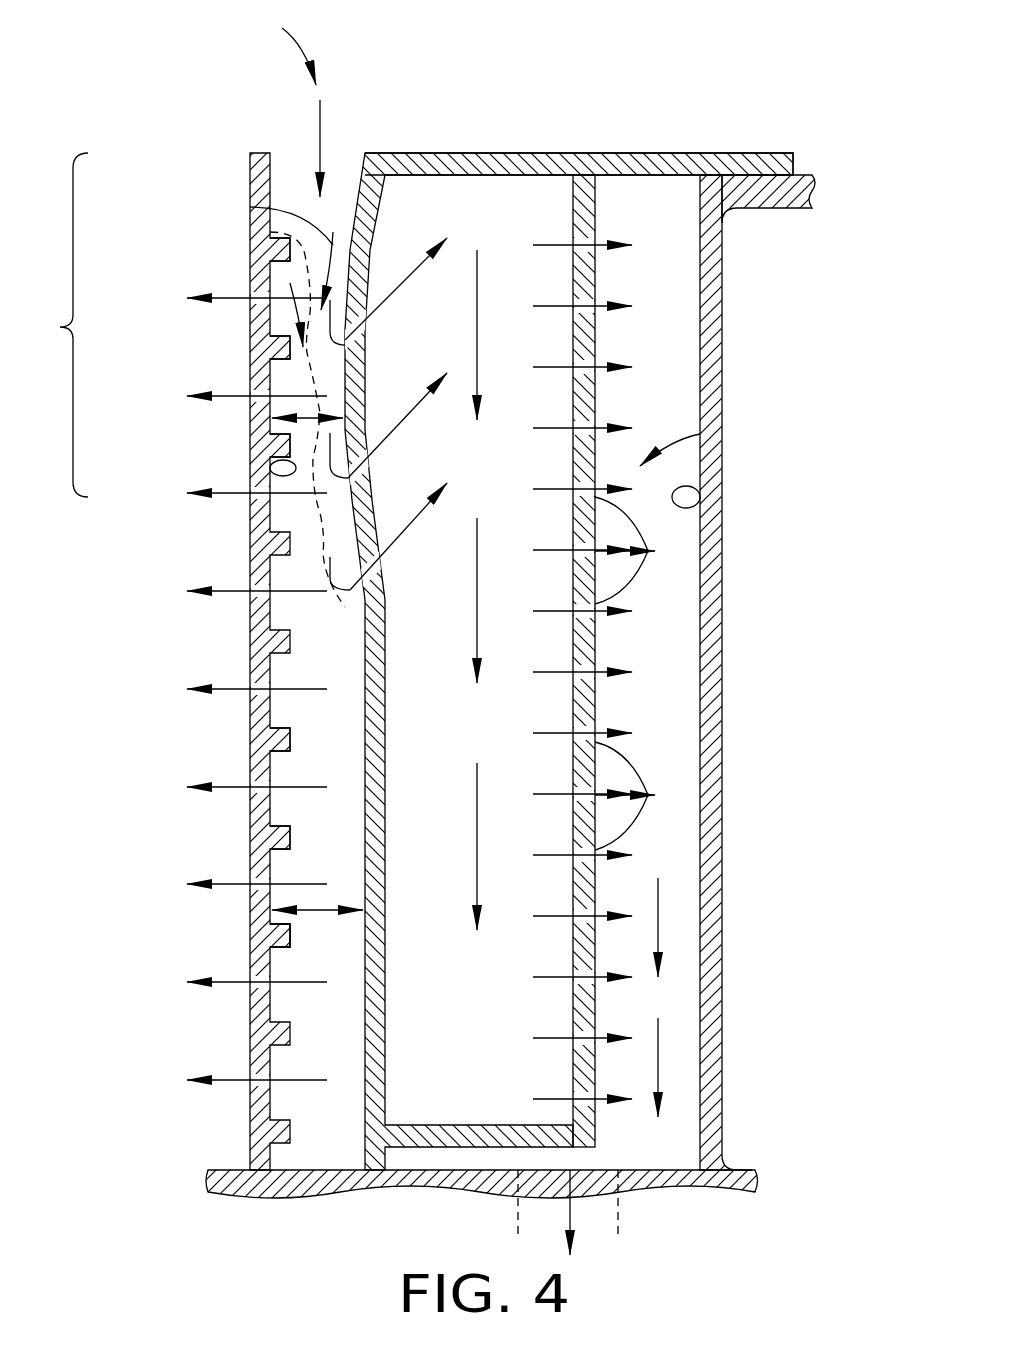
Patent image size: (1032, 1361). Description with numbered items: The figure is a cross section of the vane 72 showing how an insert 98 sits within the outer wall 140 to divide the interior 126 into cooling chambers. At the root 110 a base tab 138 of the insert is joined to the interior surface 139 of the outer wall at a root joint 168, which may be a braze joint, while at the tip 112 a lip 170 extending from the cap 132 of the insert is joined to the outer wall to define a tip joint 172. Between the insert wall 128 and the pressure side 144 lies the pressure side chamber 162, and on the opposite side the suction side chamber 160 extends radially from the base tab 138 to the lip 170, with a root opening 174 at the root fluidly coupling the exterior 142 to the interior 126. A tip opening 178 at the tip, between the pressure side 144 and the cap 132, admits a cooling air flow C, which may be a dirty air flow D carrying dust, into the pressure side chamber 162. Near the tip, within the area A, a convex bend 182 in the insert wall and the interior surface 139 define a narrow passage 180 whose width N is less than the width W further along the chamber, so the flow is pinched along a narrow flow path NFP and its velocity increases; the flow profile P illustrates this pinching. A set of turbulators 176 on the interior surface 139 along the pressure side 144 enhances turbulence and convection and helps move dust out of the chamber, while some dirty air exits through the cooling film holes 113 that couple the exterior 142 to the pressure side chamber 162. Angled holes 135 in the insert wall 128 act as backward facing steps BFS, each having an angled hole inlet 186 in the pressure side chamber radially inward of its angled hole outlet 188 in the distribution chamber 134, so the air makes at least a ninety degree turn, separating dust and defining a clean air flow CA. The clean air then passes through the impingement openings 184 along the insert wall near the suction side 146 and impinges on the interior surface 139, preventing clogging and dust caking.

The vane 72 is at (250, 88).
The insert 98 is at (620, 106).
The root 110 is at (660, 1178).
The tip 112 is at (800, 168).
The cooling film holes 113 is at (252, 600).
The interior 126 is at (348, 669).
The insert wall 128 is at (595, 395).
The cap 132 is at (475, 152).
The distribution chamber 134 is at (595, 320).
The angled holes 135 is at (348, 333).
The base tab 138 is at (373, 1162).
The interior surface 139 is at (265, 478).
The outer wall 140 is at (710, 257).
The exterior 142 is at (868, 734).
The pressure side 144 is at (250, 943).
The suction side 146 is at (722, 820).
The suction side chamber 160 is at (700, 432).
The pressure side chamber 162 is at (320, 718).
The root joint 168 is at (388, 1160).
The lip 170 is at (757, 163).
The tip joint 172 is at (700, 173).
The root opening 174 is at (600, 1213).
The turbulators 176 is at (283, 252).
The tip opening 178 is at (343, 157).
The narrow passage 180 is at (352, 388).
The convex bend 182 is at (360, 255).
The impingement openings 184 is at (650, 673).
The angled hole inlet 186 is at (332, 362).
The angled hole outlet 188 is at (362, 320).
The area A is at (60, 330).
The cooling air flow C is at (278, 22).
The dirty air flow D is at (320, 130).
The width N is at (270, 410).
The width W is at (318, 913).
The flow profile P is at (250, 207).
The narrow flow path NFP is at (270, 232).
The backward facing steps BFS is at (360, 482).
The clean air flow CA is at (477, 552).